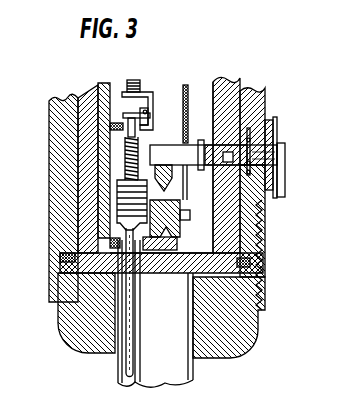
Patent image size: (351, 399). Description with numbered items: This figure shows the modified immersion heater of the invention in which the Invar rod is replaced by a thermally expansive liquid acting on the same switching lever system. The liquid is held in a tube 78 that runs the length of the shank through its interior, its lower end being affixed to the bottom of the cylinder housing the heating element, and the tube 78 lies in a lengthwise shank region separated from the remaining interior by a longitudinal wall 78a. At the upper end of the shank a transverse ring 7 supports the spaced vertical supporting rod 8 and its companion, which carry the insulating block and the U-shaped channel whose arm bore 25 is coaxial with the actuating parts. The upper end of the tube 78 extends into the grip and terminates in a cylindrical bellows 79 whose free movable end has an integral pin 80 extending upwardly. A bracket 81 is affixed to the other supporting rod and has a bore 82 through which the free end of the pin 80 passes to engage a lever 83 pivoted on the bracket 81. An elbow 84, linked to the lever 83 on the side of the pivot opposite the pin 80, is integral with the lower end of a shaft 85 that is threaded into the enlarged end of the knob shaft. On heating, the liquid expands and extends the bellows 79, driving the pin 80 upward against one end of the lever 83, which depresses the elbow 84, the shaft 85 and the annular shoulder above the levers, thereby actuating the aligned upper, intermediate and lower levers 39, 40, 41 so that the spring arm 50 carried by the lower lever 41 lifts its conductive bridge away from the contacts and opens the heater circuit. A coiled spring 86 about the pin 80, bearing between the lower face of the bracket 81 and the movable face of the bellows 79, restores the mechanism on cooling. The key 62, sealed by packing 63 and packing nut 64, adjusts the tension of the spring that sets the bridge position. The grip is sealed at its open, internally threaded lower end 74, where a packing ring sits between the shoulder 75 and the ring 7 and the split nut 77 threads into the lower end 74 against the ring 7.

The transverse ring 7 is at (232, 101).
The supporting rod 8 is at (58, 268).
The bore 25 is at (110, 245).
The upper lever 39 is at (186, 85).
The intermediate lever 40 is at (176, 200).
The lower lever 41 is at (180, 233).
The spring arm 50 is at (224, 100).
The key 62 is at (282, 152).
The packing 63 is at (252, 177).
The packing nut 64 is at (276, 186).
The lower end of the grip 74 is at (258, 241).
The shoulder 75 is at (250, 262).
The split nut 77 is at (237, 322).
The tube 78 is at (126, 369).
The longitudinal wall 78a is at (141, 351).
The cylindrical bellows 79 is at (110, 218).
The pin 80 is at (117, 168).
The bracket 81 is at (110, 126).
The bore 82 is at (124, 116).
The lever 83 is at (140, 110).
The elbow 84 is at (122, 93).
The shaft 85 is at (139, 80).
The coiled spring 86 is at (125, 150).